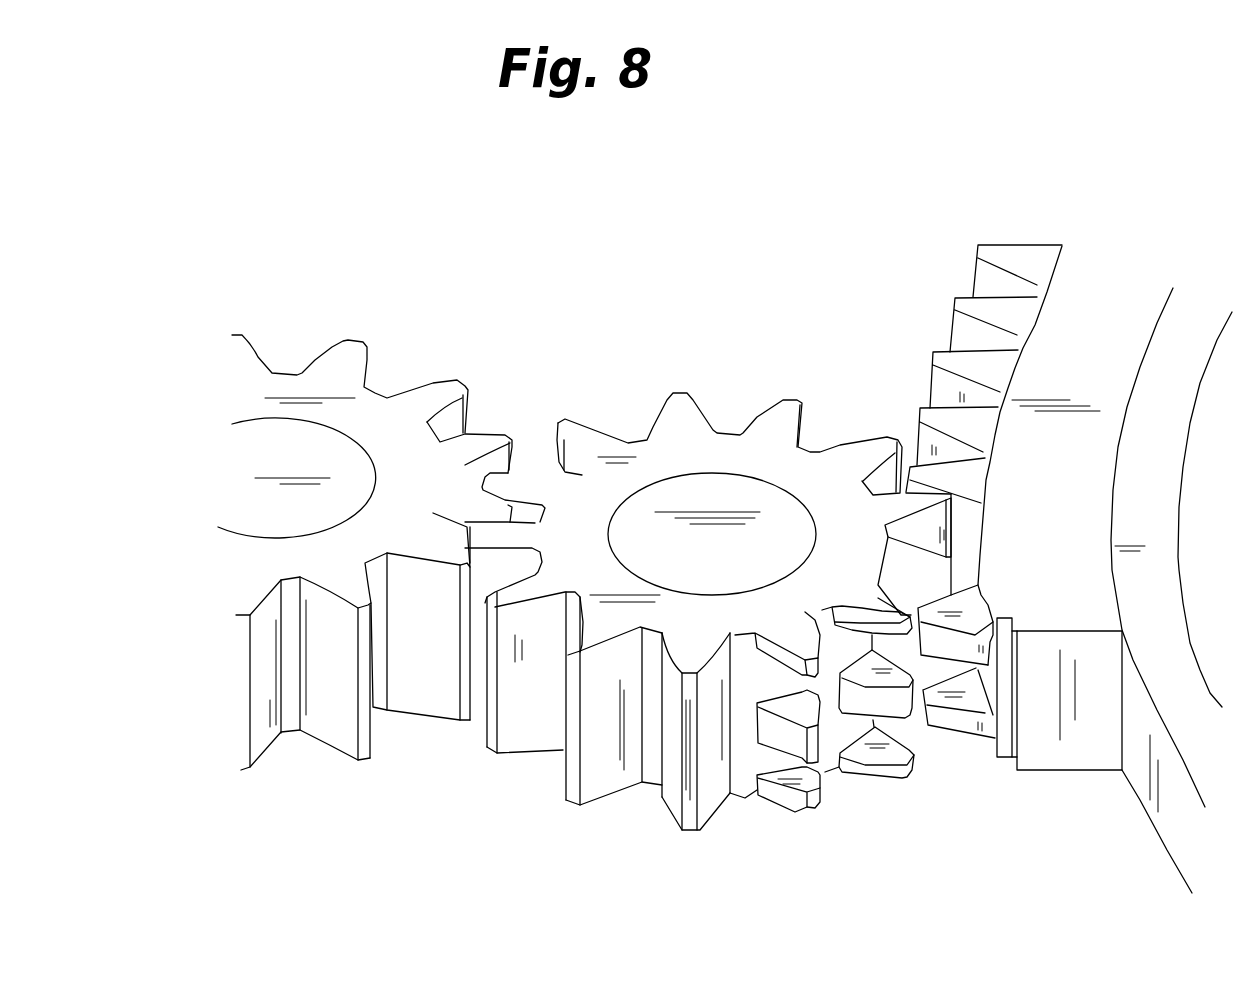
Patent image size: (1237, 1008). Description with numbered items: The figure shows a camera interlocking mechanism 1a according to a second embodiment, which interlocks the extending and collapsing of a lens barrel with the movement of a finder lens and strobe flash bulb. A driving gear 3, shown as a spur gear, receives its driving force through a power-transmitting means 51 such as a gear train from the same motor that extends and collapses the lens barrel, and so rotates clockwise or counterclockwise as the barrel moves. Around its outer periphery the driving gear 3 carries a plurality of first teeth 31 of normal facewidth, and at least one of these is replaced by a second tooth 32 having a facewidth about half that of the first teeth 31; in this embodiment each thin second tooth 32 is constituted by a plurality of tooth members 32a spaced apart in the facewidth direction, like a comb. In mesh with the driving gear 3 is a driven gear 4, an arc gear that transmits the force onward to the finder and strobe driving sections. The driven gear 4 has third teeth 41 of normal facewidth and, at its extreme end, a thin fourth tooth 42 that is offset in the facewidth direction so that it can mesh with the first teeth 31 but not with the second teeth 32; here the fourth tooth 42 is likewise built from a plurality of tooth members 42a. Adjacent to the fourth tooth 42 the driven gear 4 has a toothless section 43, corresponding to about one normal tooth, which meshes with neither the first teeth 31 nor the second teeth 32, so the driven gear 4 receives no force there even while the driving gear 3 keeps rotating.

The camera interlocking mechanism 1a is at (702, 308).
The power-transmitting means 51 is at (343, 362).
The driving gear 3 is at (668, 418).
The first teeth 31 is at (593, 785).
The second teeth 32 is at (743, 800).
The tooth members 32a is at (781, 810).
The driven gear 4 is at (1033, 352).
The third teeth 41 is at (943, 422).
The fourth tooth 42 is at (985, 780).
The tooth members 42a is at (948, 720).
The toothless section 43 is at (972, 558).